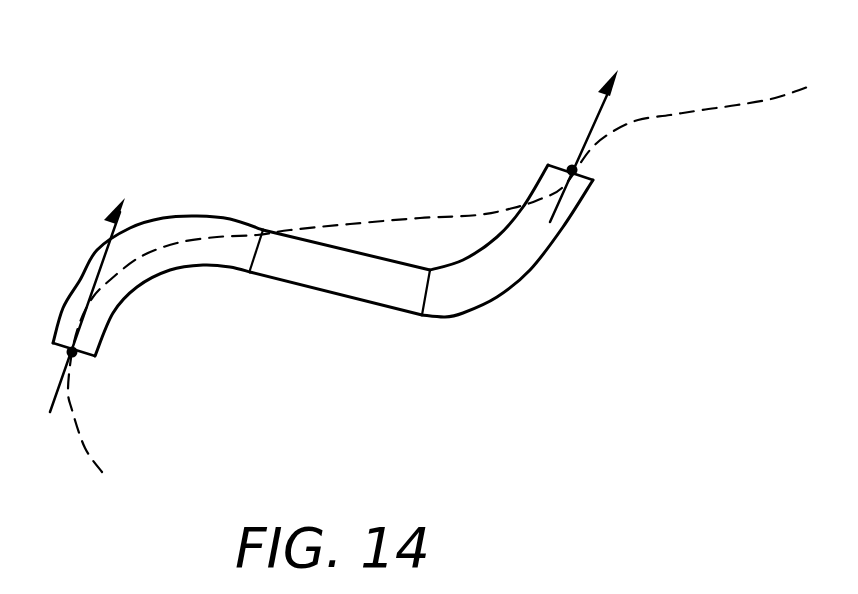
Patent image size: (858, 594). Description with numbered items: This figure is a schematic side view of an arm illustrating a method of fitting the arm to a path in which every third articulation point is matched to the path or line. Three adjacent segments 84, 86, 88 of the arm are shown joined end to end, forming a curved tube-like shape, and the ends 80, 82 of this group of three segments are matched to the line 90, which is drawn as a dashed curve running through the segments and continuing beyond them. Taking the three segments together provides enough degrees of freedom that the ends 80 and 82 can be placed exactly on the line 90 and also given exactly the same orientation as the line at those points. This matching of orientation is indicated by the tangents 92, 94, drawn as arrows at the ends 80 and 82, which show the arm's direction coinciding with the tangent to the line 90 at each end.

The end 80 is at (83, 360).
The end 82 is at (610, 187).
The segment 84 is at (173, 272).
The segment 86 is at (342, 288).
The segment 88 is at (530, 268).
The line 90 is at (669, 117).
The tangent 92 is at (102, 234).
The tangent 94 is at (597, 110).